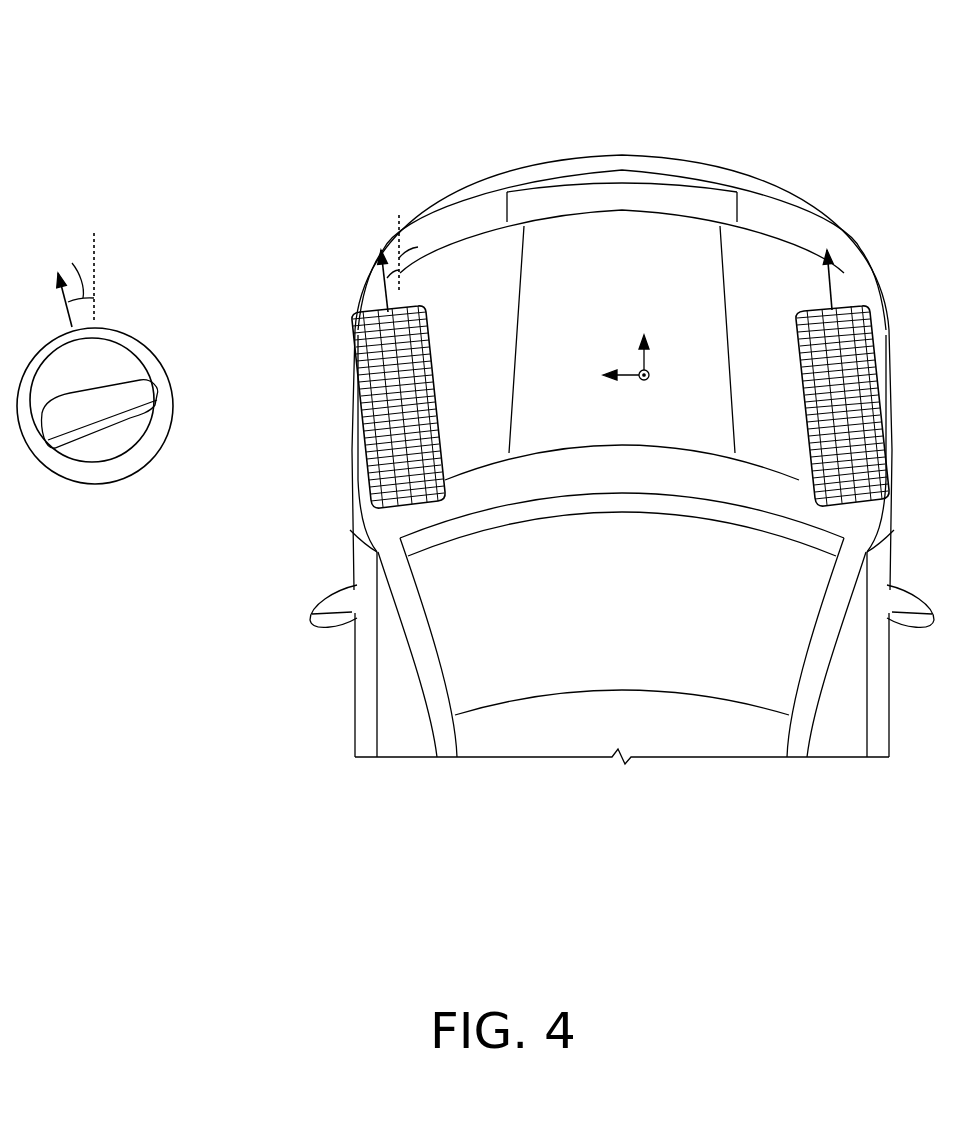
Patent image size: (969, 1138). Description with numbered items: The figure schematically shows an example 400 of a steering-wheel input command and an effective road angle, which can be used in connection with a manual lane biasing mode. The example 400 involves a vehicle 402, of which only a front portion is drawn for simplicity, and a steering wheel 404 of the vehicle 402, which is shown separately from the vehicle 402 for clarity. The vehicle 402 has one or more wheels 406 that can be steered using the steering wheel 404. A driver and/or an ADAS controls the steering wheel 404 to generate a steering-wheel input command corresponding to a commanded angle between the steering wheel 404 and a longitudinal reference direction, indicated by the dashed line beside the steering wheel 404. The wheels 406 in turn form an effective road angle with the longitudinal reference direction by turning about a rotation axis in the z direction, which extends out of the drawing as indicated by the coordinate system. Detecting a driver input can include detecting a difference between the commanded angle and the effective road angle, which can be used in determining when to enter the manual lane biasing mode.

The example of a steering-wheel input command and an effective road angle 400 is at (766, 57).
The vehicle 402 is at (640, 620).
The steering wheel 404 is at (113, 419).
The wheels 406 is at (433, 320).